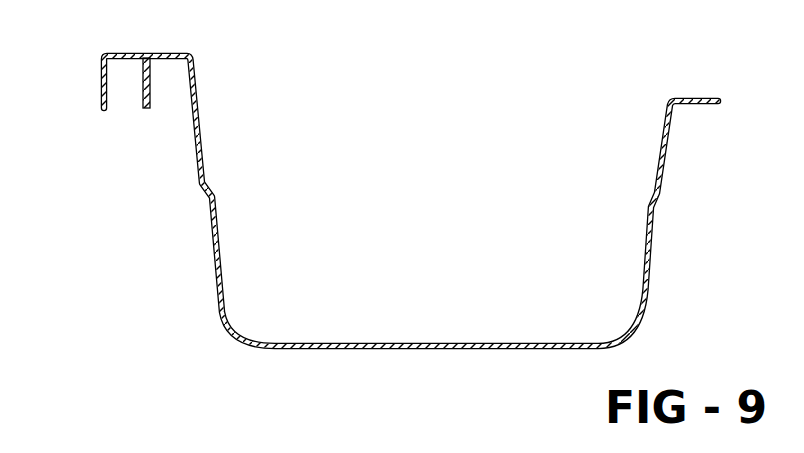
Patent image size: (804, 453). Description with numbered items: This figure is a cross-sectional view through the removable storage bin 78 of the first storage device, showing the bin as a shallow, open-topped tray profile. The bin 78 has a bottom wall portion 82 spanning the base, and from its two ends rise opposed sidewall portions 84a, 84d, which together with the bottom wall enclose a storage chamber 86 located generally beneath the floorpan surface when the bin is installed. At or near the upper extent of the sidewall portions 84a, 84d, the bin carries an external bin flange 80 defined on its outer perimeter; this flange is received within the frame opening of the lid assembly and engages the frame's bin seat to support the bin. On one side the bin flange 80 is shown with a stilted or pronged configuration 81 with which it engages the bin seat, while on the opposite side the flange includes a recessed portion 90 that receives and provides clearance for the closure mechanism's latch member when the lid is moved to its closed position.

The removable storage bin 78 is at (79, 62).
The external bin flange 80 is at (101, 106).
The stilted or pronged configuration 81 is at (188, 114).
The bottom wall portion 82 is at (417, 352).
The sidewall portion 84a is at (200, 185).
The sidewall portion 84d is at (659, 209).
The storage chamber 86 is at (448, 220).
The recessed portion 90 is at (698, 98).